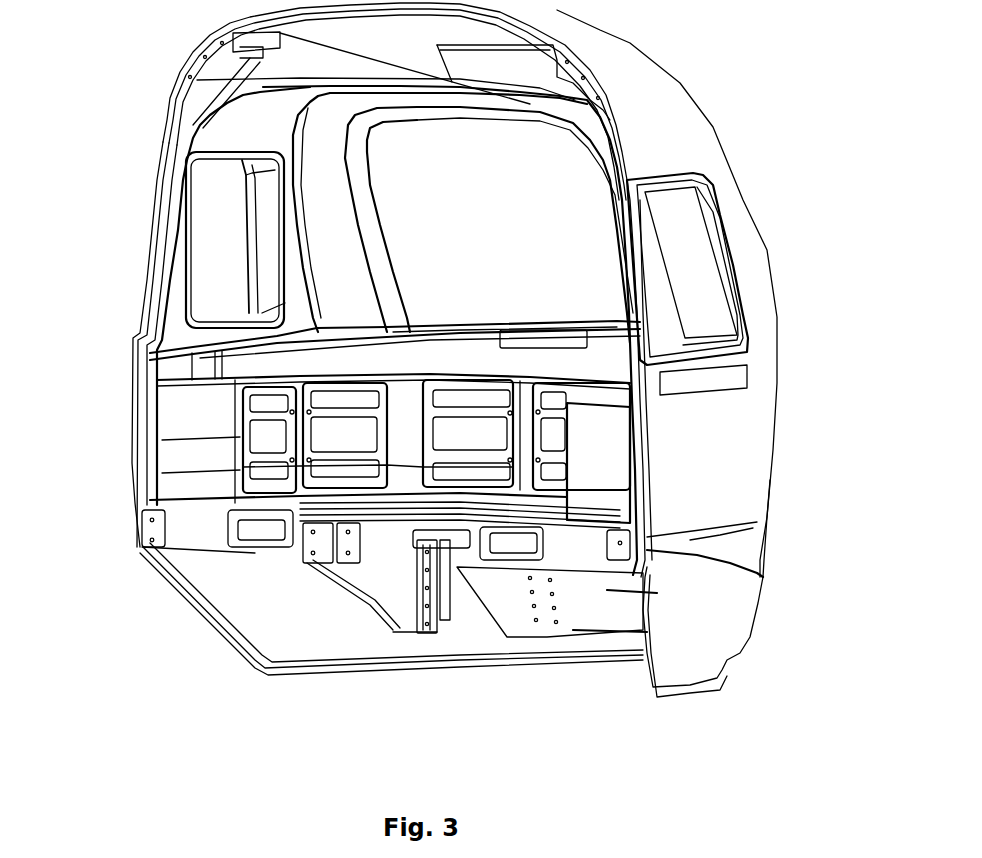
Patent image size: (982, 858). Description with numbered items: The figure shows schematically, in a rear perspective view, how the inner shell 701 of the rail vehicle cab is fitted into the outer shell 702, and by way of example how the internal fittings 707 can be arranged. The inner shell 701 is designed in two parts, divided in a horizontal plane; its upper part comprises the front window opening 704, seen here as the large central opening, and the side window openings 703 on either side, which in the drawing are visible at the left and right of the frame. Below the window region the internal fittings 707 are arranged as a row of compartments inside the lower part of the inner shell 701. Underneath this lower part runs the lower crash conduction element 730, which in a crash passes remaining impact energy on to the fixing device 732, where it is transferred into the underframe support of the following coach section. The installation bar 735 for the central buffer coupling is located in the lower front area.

The inner shell 701 is at (220, 128).
The outer shell 702 is at (647, 124).
The side window opening 703 is at (207, 264).
The front window opening 704 is at (440, 210).
The internal fittings 707 is at (243, 440).
The lower crash conduction element 730 is at (462, 580).
The fixing device of the lower crash element on the underframe support 732 is at (443, 543).
The installation bar for central buffer coupling 735 is at (447, 615).